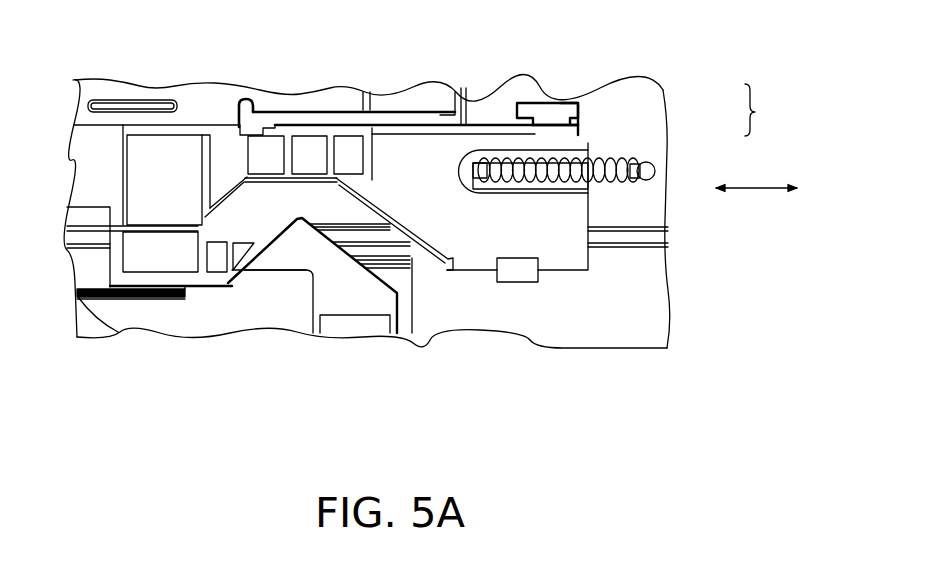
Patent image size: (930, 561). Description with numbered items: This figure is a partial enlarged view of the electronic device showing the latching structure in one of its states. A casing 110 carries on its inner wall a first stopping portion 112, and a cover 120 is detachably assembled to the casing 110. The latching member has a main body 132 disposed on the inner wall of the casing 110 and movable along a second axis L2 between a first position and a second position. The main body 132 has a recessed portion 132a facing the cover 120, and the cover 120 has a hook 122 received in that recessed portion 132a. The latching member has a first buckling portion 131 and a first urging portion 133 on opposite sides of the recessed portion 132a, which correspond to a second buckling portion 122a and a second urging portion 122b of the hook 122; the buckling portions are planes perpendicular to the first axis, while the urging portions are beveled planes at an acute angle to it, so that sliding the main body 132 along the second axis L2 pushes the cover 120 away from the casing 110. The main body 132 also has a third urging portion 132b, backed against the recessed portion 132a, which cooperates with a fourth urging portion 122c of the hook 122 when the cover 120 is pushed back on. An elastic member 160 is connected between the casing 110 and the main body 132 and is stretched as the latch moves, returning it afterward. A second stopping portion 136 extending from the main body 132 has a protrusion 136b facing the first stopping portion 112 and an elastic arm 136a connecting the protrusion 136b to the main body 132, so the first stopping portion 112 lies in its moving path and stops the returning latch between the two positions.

The casing 110 is at (499, 107).
The first stopping portion 112 is at (553, 103).
The cover 120 is at (630, 300).
The hook 122 is at (348, 298).
The second buckling portion 122a is at (280, 275).
The second urging portion 122b is at (348, 252).
The fourth urging portion 122c is at (277, 237).
The first buckling portion 131 is at (240, 232).
The main body 132 is at (410, 170).
The recessed portion 132a is at (308, 192).
The third urging portion 132b is at (243, 275).
The first urging portion 133 is at (417, 260).
The second stopping portion 136 is at (767, 110).
The elastic arm 136a is at (535, 134).
The protrusion 136b is at (583, 122).
The elastic member 160 is at (627, 193).
The second axis L2 is at (756, 172).